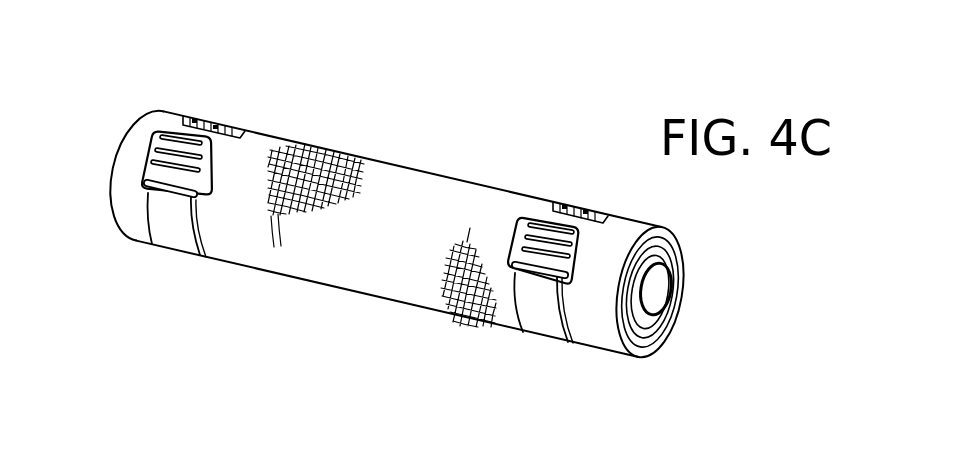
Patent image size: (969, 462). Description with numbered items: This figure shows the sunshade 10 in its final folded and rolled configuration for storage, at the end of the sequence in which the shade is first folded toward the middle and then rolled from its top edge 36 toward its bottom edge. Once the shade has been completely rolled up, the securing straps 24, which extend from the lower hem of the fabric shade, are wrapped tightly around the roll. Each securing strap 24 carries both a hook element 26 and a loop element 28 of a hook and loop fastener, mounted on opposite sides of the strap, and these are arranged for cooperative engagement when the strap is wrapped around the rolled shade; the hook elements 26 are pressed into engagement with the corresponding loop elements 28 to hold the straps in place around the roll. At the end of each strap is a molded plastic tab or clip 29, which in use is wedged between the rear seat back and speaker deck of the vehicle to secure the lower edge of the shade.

The sunshade 10 is at (100, 160).
The securing strap 24 is at (248, 107).
The hook element 26 is at (165, 213).
The loop element 28 is at (205, 118).
The clip 29 is at (147, 140).
The top edge 36 is at (641, 289).